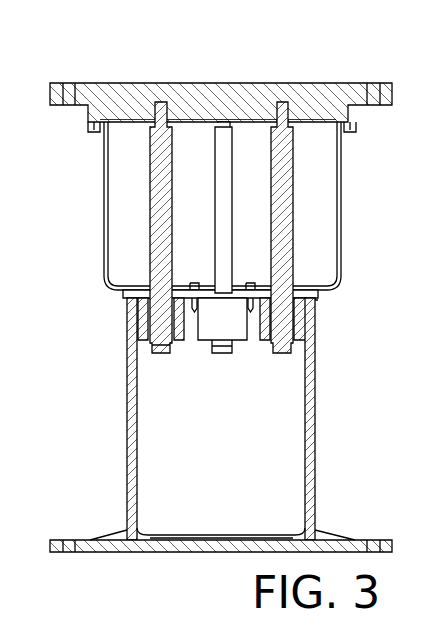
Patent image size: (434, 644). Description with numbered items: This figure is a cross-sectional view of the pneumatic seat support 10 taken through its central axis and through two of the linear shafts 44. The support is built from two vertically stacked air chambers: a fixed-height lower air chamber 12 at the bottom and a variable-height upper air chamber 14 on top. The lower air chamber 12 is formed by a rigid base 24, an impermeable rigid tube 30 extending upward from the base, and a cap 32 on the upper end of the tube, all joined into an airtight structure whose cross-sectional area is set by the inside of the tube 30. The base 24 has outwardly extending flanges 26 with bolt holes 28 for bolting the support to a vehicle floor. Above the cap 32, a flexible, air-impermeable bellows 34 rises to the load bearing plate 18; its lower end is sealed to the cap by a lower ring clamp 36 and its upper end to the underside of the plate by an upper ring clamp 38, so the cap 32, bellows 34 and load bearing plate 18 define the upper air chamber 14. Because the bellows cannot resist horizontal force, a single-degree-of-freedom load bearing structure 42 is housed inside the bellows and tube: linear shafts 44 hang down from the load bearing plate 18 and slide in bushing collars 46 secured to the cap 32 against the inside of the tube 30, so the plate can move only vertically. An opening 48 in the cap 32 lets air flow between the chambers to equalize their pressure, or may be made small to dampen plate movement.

The pneumatic seat support 10 is at (215, 56).
The lower air chamber 12 is at (96, 421).
The upper air chamber 14 is at (70, 174).
The load bearing plate 18 is at (250, 92).
The rigid base 24 is at (174, 548).
The flanges 26 is at (117, 548).
The bolt holes 28 is at (72, 545).
The rigid tube 30 is at (308, 470).
The cap 32 is at (318, 322).
The bellows 34 is at (342, 207).
The lower ring clamp 36 is at (313, 290).
The upper ring clamp 38 is at (348, 135).
The load bearing structure 42 is at (310, 182).
The linear shafts 44 is at (227, 295).
The bushing collars 46 is at (210, 350).
The opening 48 is at (222, 240).